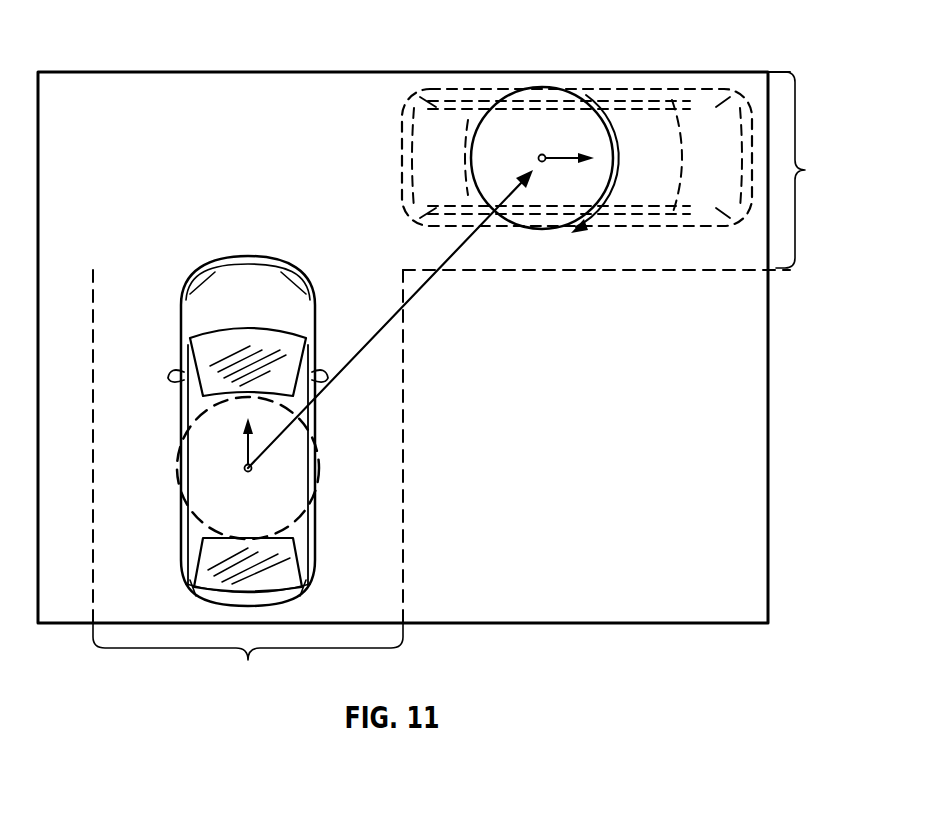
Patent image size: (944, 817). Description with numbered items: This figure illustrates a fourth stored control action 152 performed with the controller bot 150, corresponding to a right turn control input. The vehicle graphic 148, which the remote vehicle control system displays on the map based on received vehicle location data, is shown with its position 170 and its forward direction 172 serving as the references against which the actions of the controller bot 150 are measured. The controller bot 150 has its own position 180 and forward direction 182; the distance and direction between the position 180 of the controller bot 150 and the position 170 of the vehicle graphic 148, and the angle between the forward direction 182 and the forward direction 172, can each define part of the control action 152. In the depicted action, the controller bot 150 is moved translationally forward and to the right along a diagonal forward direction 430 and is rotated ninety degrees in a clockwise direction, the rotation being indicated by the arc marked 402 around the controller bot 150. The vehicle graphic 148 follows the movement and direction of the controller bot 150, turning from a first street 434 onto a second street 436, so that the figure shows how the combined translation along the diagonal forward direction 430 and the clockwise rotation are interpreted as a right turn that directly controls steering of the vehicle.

The vehicle graphic 148 is at (305, 588).
The controller bot 150 is at (528, 88).
The control action 152 is at (566, 335).
The position 170 is at (245, 470).
The forward direction 172 is at (243, 445).
The position 180 is at (538, 157).
The forward direction 182 is at (557, 152).
The rotation angle 402 is at (623, 143).
The diagonal forward direction 430 is at (420, 288).
The first street 434 is at (248, 483).
The second street 436 is at (630, 171).